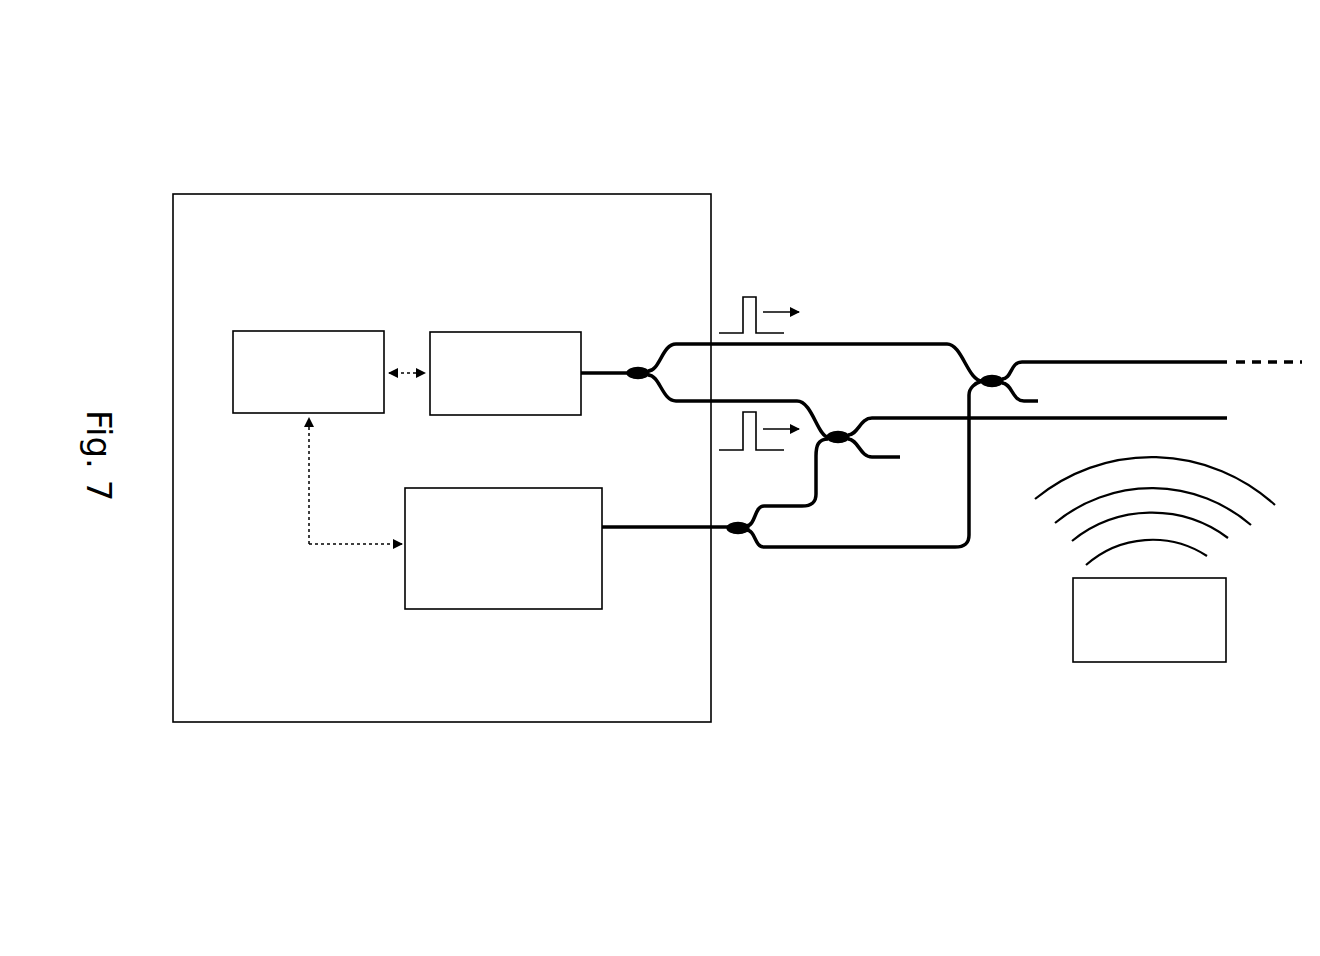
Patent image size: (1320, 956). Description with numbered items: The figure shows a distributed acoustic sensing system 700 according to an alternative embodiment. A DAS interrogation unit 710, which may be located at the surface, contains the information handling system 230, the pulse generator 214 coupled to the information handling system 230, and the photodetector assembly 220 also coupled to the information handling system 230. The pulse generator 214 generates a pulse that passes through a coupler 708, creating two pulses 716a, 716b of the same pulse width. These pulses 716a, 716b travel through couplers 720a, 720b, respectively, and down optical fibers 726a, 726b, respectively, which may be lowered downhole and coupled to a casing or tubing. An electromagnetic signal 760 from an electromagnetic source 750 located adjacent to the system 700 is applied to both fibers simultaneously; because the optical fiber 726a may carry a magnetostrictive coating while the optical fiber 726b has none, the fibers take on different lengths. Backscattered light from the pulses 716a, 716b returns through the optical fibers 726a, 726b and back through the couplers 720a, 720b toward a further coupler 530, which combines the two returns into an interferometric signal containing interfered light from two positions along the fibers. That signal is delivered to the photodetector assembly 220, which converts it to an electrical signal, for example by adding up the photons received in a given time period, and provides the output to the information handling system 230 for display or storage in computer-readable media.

The distributed acoustic sensing system 700 is at (1162, 160).
The DAS interrogation unit 710 is at (613, 722).
The information handling system 230 is at (303, 331).
The pulse generator 214 is at (505, 331).
The photodetector assembly 220 is at (405, 583).
The coupler 708 is at (636, 368).
The pulse 716a is at (742, 312).
The pulse 716b is at (742, 430).
The coupler 720a is at (994, 374).
The coupler 720b is at (838, 444).
The optical fiber 726a is at (1131, 362).
The optical fiber 726b is at (1133, 418).
The optical coupler 530 is at (742, 536).
The electromagnetic signal 760 is at (1070, 478).
The electromagnetic source 750 is at (1073, 620).